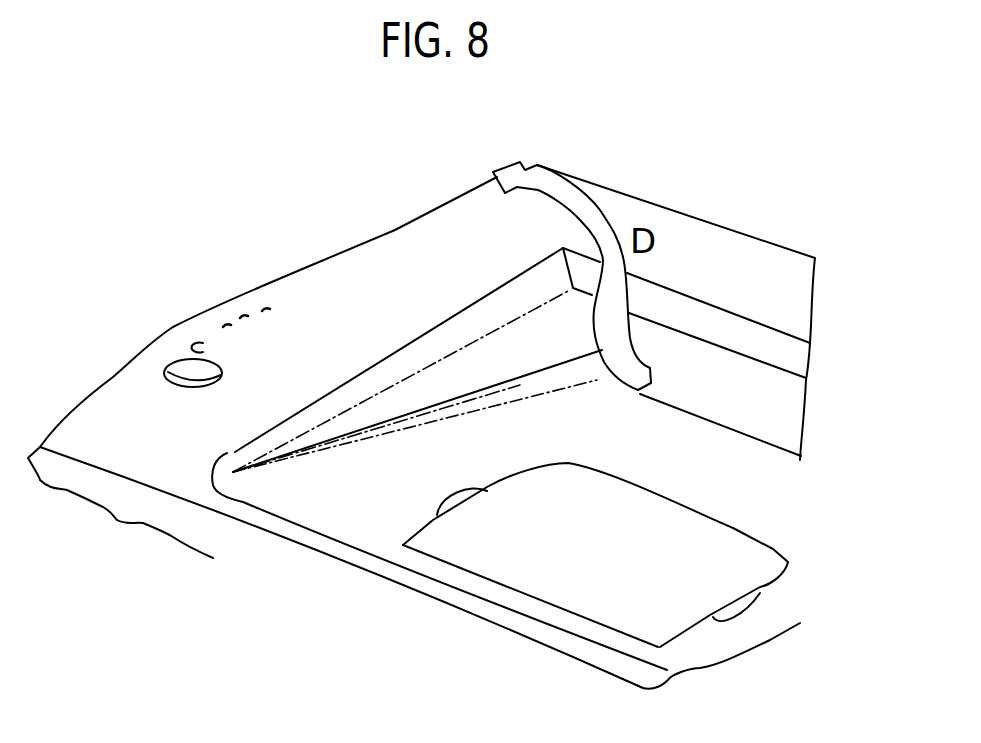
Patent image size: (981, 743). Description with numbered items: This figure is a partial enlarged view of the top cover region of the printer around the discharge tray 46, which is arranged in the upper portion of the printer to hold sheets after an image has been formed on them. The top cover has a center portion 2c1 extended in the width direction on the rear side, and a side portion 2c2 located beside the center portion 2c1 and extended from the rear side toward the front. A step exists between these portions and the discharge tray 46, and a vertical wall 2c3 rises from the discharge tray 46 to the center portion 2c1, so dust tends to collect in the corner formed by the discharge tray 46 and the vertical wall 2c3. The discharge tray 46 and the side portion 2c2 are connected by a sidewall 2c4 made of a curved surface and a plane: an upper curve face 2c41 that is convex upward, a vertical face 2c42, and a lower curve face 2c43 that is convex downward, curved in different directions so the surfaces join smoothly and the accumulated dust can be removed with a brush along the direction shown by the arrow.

The center portion 2c1 is at (700, 230).
The side portion 2c2 is at (468, 214).
The vertical wall 2c3 is at (708, 367).
The sidewall 2c4 is at (318, 183).
The upper curve face 2c41 is at (489, 304).
The vertical face 2c42 is at (473, 352).
The lower curve face 2c43 is at (493, 395).
The discharge tray 46 is at (690, 457).